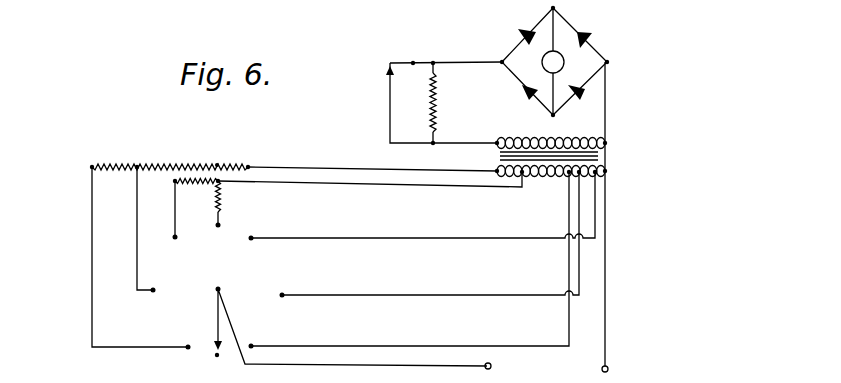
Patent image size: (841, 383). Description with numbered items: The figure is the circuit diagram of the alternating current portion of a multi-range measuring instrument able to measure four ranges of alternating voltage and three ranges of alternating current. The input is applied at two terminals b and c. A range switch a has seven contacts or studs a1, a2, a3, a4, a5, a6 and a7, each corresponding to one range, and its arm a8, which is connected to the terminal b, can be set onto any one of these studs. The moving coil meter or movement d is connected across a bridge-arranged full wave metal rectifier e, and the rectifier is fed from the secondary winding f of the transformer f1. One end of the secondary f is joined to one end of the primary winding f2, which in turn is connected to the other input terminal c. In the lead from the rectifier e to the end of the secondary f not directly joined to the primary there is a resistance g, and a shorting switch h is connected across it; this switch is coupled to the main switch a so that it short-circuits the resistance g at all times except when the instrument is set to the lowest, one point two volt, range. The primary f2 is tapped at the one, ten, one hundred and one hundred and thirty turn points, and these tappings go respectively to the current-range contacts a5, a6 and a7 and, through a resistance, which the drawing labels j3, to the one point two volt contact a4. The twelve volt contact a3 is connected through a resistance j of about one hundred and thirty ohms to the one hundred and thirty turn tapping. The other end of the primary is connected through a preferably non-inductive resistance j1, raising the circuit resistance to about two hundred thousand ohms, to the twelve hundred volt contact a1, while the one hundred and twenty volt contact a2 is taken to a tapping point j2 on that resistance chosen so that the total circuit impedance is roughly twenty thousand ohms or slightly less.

The full wave metal rectifier e is at (517, 78).
The moving coil meter d is at (587, 91).
The shorting switch h is at (389, 64).
The resistance g is at (435, 100).
The secondary winding f is at (515, 136).
The transformer f1 is at (598, 152).
The primary winding f2 is at (583, 176).
The resistance j is at (177, 181).
The non-inductive resistance j1 is at (217, 165).
The tapping point j2 is at (137, 167).
The auxiliary resistance j3 is at (224, 207).
The switch a is at (205, 348).
The contact a1 is at (186, 334).
The contact a2 is at (156, 301).
The contact a3 is at (179, 250).
The contact a4 is at (221, 236).
The contact a5 is at (418, 217).
The contact a6 is at (430, 234).
The contact a7 is at (409, 260).
The switch arm a8 is at (219, 316).
The input terminal b is at (497, 367).
The input terminal c is at (602, 369).